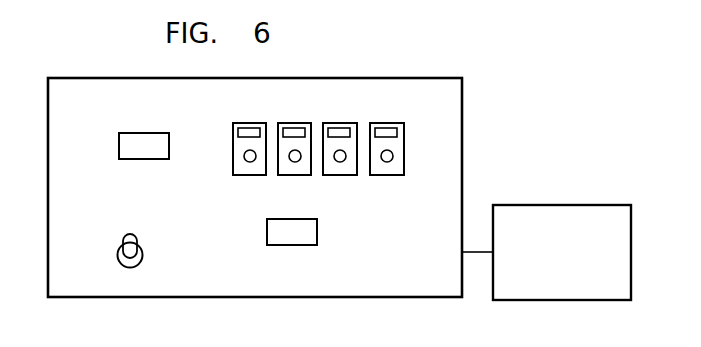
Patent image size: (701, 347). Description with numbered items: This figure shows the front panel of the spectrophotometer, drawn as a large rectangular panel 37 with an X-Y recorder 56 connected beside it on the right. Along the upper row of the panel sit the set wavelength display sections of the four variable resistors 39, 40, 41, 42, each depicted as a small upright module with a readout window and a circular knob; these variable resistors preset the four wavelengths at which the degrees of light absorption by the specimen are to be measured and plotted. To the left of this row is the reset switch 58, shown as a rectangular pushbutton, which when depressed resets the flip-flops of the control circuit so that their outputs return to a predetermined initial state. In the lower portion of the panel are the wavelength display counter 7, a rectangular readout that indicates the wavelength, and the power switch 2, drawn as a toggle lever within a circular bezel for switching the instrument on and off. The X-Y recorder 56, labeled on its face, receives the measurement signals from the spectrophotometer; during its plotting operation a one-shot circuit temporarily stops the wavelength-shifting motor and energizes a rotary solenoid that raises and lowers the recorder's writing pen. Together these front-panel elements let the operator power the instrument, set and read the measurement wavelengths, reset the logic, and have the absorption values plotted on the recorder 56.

The control panel housing 37 is at (387, 298).
The reset switch 58 is at (164, 133).
The variable resistor 39 is at (243, 123).
The variable resistor 40 is at (286, 123).
The variable resistor 41 is at (330, 123).
The variable resistor 42 is at (377, 123).
The wavelength display counter 7 is at (267, 226).
The power switch 2 is at (143, 244).
The X-Y recorder 56 is at (585, 205).